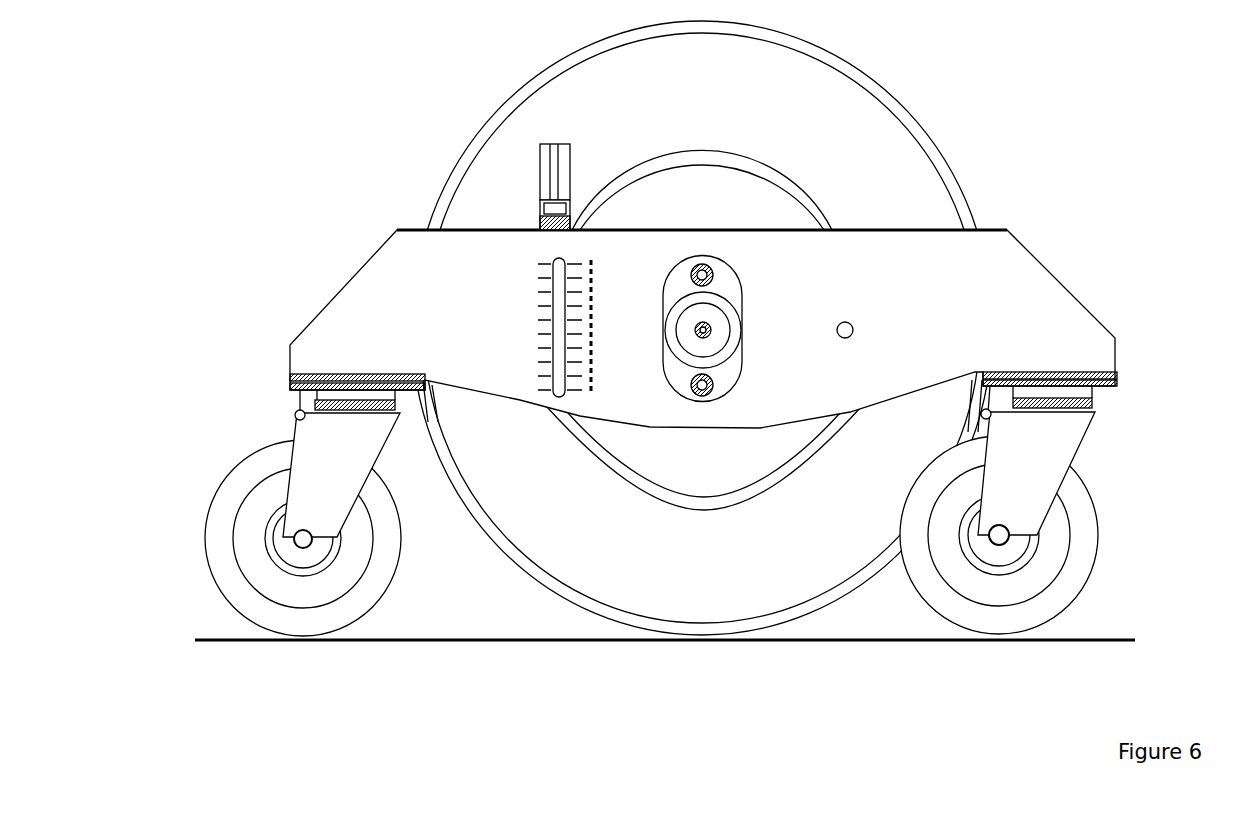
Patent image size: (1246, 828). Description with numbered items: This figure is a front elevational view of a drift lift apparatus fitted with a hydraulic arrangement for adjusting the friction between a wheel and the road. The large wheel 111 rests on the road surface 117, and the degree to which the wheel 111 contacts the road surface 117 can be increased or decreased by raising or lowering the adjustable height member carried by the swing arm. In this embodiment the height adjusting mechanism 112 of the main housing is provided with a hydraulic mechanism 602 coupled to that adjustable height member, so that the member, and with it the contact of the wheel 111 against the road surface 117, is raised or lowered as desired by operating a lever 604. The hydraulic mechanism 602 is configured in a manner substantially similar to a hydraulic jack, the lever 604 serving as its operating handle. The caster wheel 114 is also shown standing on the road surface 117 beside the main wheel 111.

The wheel 111 is at (736, 591).
The height adjusting mechanism 112 is at (1022, 332).
The caster wheel 114 is at (240, 580).
The road surface 117 is at (505, 643).
The hydraulic mechanism 602 is at (537, 171).
The lever 604 is at (522, 153).